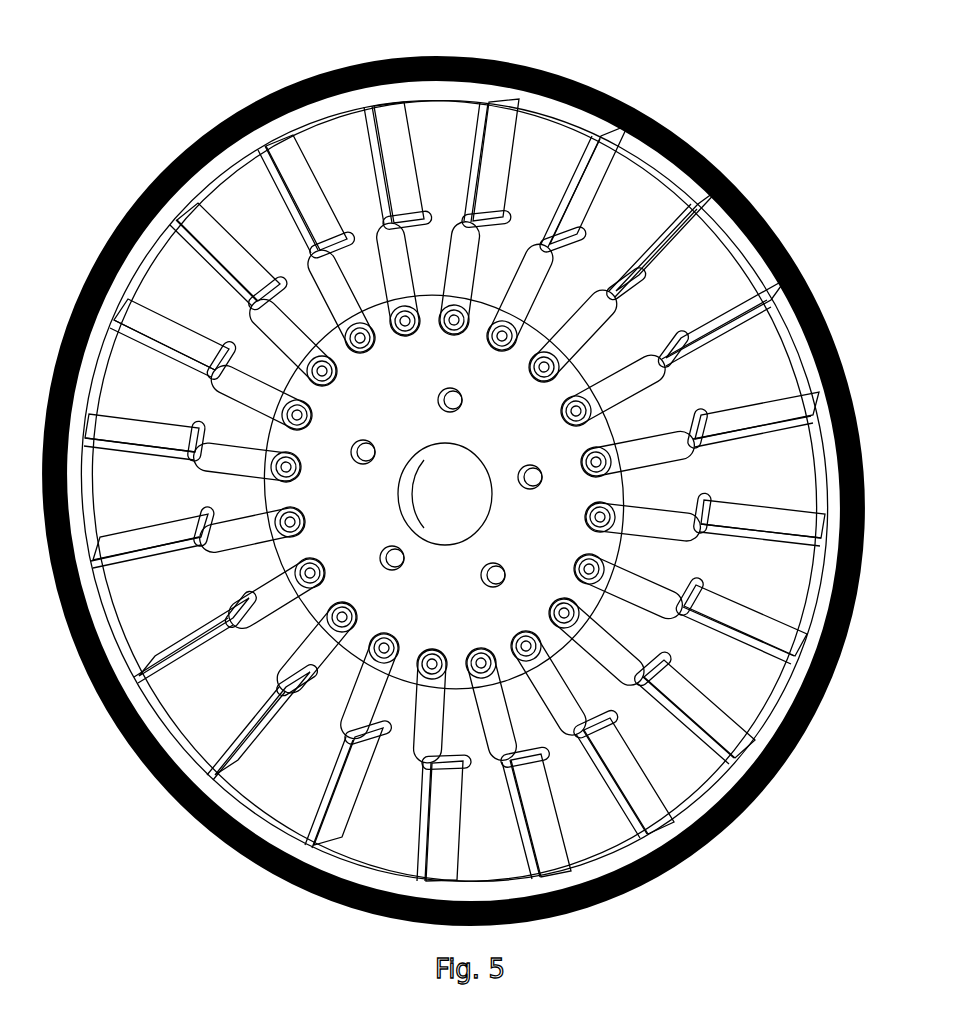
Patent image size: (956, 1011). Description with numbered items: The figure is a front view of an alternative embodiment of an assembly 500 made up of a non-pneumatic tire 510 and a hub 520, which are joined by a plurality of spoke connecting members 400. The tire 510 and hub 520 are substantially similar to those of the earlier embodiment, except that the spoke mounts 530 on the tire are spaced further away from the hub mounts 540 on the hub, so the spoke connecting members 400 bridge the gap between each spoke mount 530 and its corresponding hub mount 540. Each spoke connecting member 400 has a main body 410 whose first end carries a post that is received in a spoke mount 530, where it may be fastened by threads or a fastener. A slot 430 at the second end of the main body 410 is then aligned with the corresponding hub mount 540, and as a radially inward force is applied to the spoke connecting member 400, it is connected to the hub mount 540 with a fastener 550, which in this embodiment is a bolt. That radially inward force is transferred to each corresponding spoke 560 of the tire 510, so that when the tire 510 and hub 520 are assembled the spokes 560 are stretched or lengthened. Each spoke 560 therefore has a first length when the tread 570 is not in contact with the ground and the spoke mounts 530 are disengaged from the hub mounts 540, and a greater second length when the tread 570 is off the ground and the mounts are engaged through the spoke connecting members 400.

The spoke connecting member 400 is at (519, 221).
The main body 410 is at (362, 712).
The slot 430 is at (342, 618).
The assembly 500 is at (741, 86).
The non-pneumatic tire 510 is at (717, 238).
The hub 520 is at (580, 440).
The spoke mount 530 is at (598, 723).
The hub mount 540 is at (592, 564).
The fastener 550 is at (604, 510).
The spoke 560 is at (373, 160).
The tread 570 is at (178, 125).